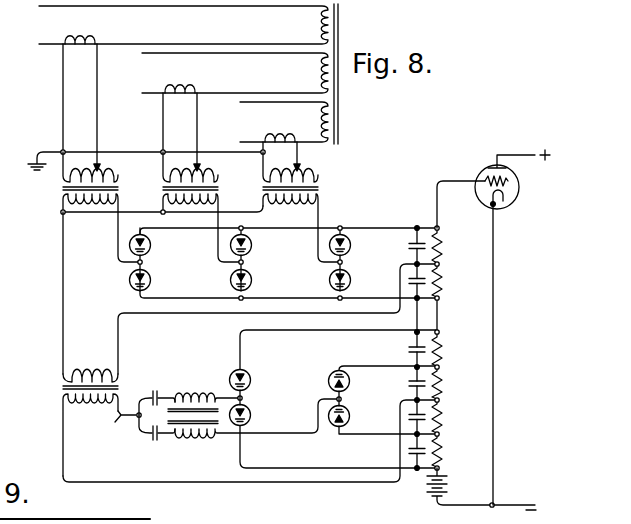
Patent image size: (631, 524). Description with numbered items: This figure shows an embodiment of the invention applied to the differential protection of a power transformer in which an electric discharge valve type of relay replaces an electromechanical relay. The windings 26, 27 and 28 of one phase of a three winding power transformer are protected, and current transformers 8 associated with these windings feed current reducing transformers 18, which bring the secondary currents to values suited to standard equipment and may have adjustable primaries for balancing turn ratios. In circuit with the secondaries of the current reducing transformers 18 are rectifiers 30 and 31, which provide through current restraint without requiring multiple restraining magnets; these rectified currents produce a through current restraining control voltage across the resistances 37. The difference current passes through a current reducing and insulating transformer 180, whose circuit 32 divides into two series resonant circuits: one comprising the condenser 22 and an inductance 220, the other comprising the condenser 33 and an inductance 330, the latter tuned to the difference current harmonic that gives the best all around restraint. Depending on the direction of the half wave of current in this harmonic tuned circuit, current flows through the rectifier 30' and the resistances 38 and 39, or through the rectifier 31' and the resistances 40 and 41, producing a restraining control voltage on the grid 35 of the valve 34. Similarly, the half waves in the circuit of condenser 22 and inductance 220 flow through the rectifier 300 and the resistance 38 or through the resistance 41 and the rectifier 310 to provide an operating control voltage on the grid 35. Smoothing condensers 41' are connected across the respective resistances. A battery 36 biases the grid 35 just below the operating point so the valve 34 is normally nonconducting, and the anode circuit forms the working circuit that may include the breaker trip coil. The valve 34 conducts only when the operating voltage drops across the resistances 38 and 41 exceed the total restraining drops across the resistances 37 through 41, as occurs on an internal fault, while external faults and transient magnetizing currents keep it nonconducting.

The current transformer 8 is at (80, 41).
The current reducing transformer 18 is at (61, 188).
The condenser 22 is at (155, 441).
The winding 26 is at (318, 118).
The winding 27 is at (318, 73).
The winding 28 is at (318, 25).
The rectifier 30 is at (254, 245).
The rectifier 30' is at (257, 380).
The rectifier 31 is at (254, 280).
The rectifier 31' is at (257, 415).
The circuit 32 is at (119, 426).
The condenser 33 is at (153, 391).
The electric discharge valve 34 is at (519, 193).
The grid 35 is at (489, 177).
The battery 36 is at (428, 485).
The resistance 37 is at (443, 246).
The resistance 38 is at (443, 383).
The resistance 39 is at (443, 349).
The resistance 40 is at (443, 451).
The resistance 41 is at (452, 417).
The smoothing condenser 41' is at (401, 348).
The current reducing and insulating transformer 180 is at (61, 386).
The inductance 220 is at (193, 441).
The rectifier 300 is at (350, 381).
The rectifier 310 is at (350, 416).
The inductance 330 is at (197, 392).